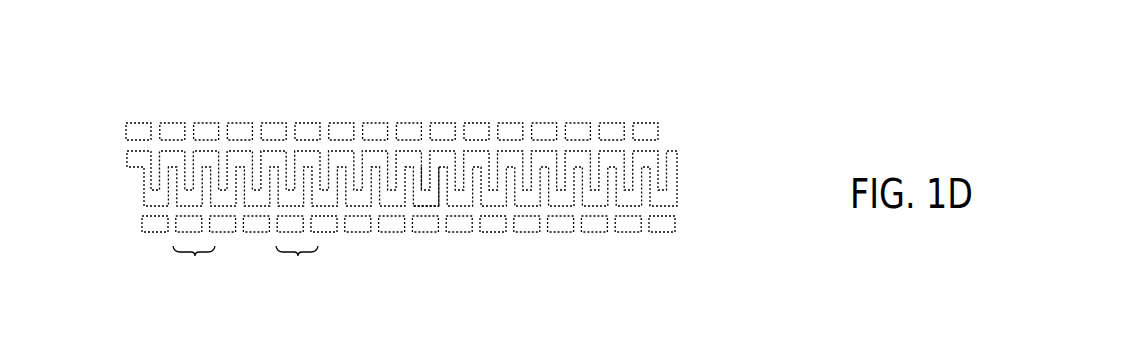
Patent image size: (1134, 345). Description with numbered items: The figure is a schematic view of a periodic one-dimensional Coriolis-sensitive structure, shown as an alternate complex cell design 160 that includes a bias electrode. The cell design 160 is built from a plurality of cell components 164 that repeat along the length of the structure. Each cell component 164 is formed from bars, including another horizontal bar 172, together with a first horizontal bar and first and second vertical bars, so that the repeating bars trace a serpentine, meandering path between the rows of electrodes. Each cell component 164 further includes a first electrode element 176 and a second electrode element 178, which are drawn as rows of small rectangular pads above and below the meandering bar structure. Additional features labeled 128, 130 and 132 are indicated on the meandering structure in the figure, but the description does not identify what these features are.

The cell design 160 is at (722, 68).
The first electrode element 176 is at (172, 125).
The second electrode element 178 is at (495, 232).
The serpentine trace 128 is at (409, 153).
The trace segment 130 is at (420, 177).
The trace segment 132 is at (437, 183).
The horizontal bar 172 is at (420, 206).
The cell component 164 is at (298, 256).